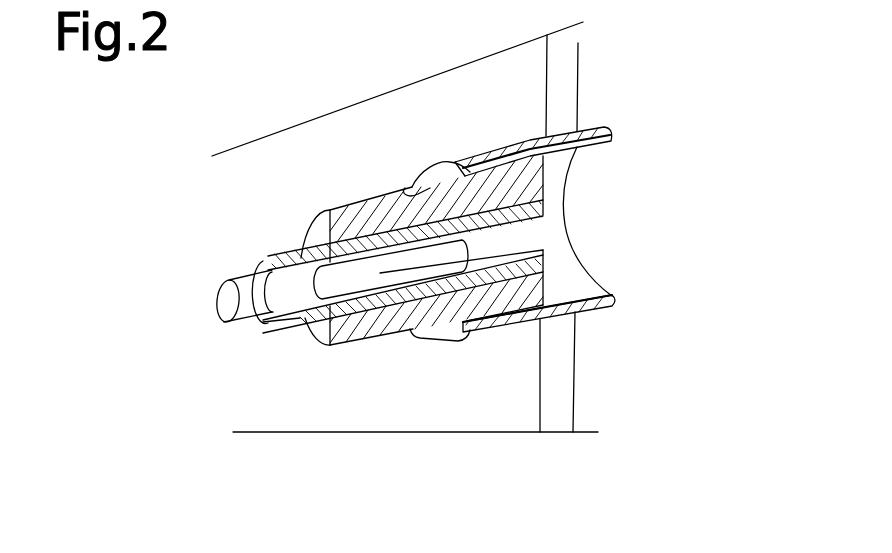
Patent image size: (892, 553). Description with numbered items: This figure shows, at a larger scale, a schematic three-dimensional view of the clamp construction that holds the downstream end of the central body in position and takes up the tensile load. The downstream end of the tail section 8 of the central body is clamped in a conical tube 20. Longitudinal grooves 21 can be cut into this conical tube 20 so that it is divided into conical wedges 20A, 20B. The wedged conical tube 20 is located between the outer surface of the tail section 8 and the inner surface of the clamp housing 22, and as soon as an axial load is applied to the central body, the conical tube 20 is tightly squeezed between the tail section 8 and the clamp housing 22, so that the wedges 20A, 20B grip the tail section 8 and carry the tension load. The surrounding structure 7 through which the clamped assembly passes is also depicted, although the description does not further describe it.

The panel 7 is at (350, 105).
The cable 8 is at (240, 277).
The connector housing 20 is at (523, 251).
The end cap portion 20A is at (292, 321).
The inner sleeve portion 20B is at (345, 235).
The lower projection 21 is at (432, 336).
The upper latch projection 22 is at (370, 198).